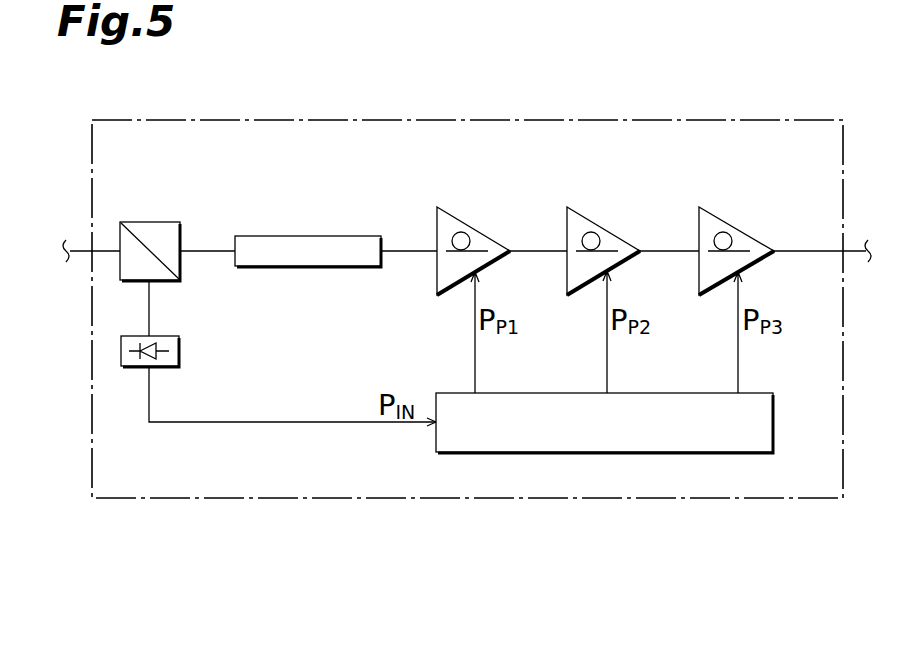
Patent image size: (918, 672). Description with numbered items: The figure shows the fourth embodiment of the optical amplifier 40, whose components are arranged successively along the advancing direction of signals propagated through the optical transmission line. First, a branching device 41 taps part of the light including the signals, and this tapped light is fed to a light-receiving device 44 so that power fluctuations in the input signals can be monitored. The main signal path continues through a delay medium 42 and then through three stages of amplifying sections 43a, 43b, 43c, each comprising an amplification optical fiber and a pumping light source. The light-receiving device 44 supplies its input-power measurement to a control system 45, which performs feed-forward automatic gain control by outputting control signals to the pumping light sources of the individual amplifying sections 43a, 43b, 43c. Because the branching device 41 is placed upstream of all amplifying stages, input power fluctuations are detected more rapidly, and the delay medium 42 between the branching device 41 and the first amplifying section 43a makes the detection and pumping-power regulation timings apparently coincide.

The optical amplifier 40 is at (722, 119).
The branching device 41 is at (148, 222).
The delay medium 42 is at (314, 236).
The amplifying section 43a is at (467, 224).
The amplifying section 43b is at (600, 224).
The amplifying section 43c is at (733, 224).
The light-receiving device 44 is at (180, 352).
The control system 45 is at (515, 392).